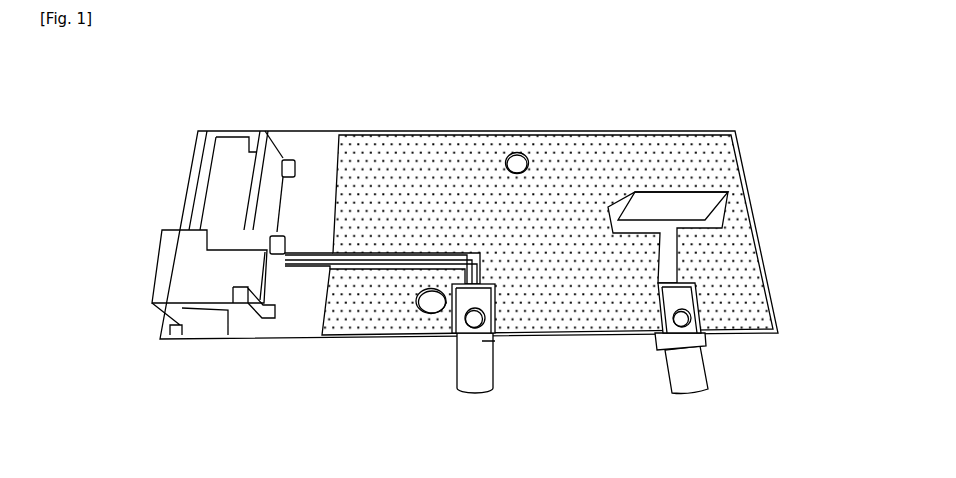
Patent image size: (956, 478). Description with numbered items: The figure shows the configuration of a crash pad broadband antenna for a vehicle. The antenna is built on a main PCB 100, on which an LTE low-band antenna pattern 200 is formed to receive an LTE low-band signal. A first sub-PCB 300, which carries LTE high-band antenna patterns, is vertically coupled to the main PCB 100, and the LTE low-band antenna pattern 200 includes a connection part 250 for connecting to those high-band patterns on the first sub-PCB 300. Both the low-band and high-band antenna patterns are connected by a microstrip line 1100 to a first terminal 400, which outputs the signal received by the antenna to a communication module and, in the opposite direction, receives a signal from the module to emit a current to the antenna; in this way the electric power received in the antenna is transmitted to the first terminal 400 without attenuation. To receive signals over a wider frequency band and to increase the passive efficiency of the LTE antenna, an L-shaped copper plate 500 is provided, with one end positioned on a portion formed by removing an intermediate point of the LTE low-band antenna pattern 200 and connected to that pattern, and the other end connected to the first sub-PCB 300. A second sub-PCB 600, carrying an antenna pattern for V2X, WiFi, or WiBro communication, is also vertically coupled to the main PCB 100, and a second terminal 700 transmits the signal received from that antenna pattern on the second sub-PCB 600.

The main PCB 100 is at (368, 336).
The LTE low-band antenna pattern 200 is at (205, 185).
The connection part 250 is at (278, 322).
The first sub-PCB 300 is at (265, 131).
The first terminal 400 is at (481, 378).
The copper plate 500 is at (170, 257).
The second sub-PCB 600 is at (708, 200).
The second terminal 700 is at (693, 378).
The microstrip line 1100 is at (343, 250).